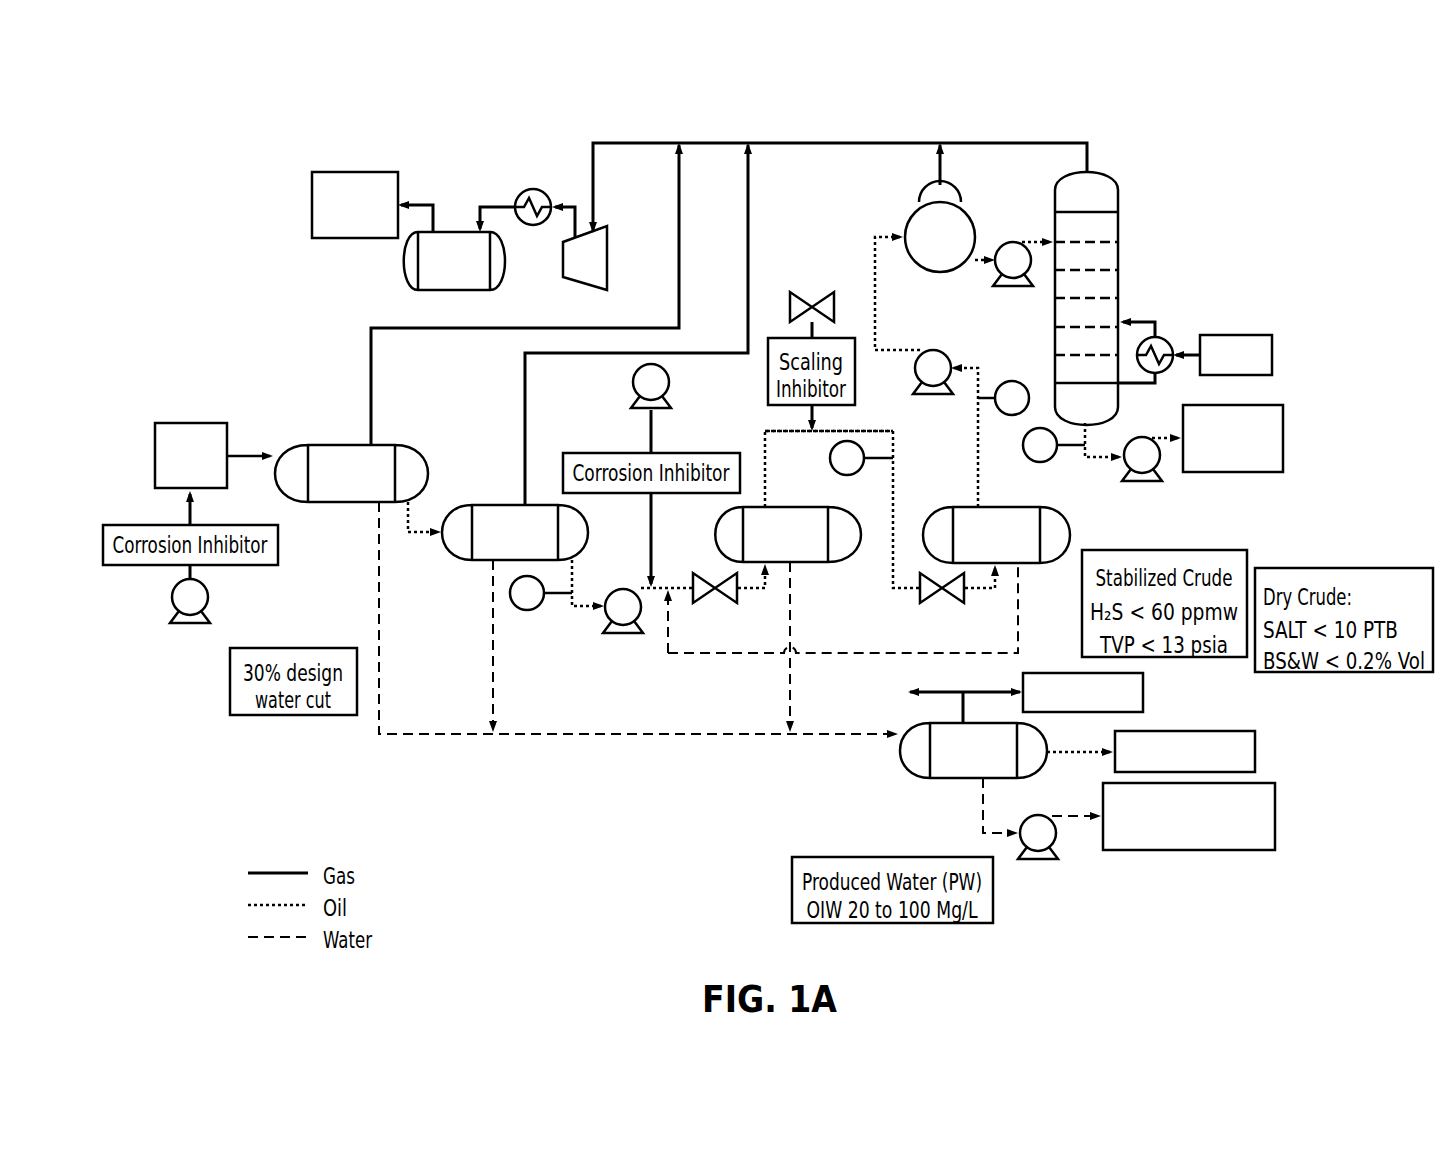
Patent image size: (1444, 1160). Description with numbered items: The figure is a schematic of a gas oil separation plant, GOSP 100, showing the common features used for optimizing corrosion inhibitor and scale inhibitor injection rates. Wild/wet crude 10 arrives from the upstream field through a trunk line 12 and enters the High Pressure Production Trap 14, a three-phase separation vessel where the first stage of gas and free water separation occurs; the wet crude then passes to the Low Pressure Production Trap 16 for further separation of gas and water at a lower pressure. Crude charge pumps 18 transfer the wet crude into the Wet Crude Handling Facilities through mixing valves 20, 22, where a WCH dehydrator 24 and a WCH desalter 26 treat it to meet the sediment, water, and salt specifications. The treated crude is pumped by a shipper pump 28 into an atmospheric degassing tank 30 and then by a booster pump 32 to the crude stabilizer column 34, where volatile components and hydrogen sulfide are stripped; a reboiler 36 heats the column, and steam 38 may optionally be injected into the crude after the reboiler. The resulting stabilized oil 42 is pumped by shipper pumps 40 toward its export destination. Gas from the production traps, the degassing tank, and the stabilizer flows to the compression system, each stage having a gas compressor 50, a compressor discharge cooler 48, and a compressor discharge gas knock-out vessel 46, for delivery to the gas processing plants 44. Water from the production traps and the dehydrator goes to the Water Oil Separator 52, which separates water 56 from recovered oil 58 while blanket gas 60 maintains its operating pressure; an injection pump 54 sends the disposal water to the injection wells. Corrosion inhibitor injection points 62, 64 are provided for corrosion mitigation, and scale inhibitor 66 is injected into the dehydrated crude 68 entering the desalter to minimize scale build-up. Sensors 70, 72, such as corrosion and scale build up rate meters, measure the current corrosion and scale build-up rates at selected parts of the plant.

The GOSP 100 is at (245, 128).
The wild/wet crude 10 is at (170, 423).
The trunk line 12 is at (255, 455).
The High Pressure Production Trap (HPPT) 14 is at (355, 503).
The Low Pressure Production Trap (LPPT) 16 is at (485, 562).
The crude charge pumps 18 is at (630, 633).
The mixing valve 20 is at (705, 598).
The mixing valve 22 is at (935, 598).
The WCH dehydrator 24 is at (805, 562).
The WCH desalter 26 is at (1010, 505).
The shipper pump 28 is at (945, 355).
The degassing tank 30 is at (908, 222).
The booster pump 32 is at (1005, 242).
The crude stabilizer column 34 is at (1120, 200).
The reboiler 36 is at (1165, 337).
The steam 38 is at (1273, 352).
The shipper pumps 40 is at (1150, 483).
The stabilized oil 42 is at (1284, 421).
The gas processing plants 44 is at (312, 210).
The compressor discharge gas knock-out vessel 46 is at (405, 272).
The compressor discharge cooler 48 is at (527, 190).
The gas compressor 50 is at (583, 283).
The Water Oil Separator (WOSEP) 52 is at (965, 778).
The injection pump 54 is at (1045, 862).
The water 56 is at (1275, 810).
The recovered oil 58 is at (1255, 755).
The blanket gas 60 is at (1143, 692).
The corrosion inhibitor injection point 62 is at (172, 600).
The corrosion inhibitor injection point 64 is at (633, 380).
The scale inhibitor 66 is at (805, 300).
The dehydrated crude 68 is at (763, 444).
The corrosion and scale build up rate meters 70 is at (1025, 445).
The sensors 72 is at (838, 470).